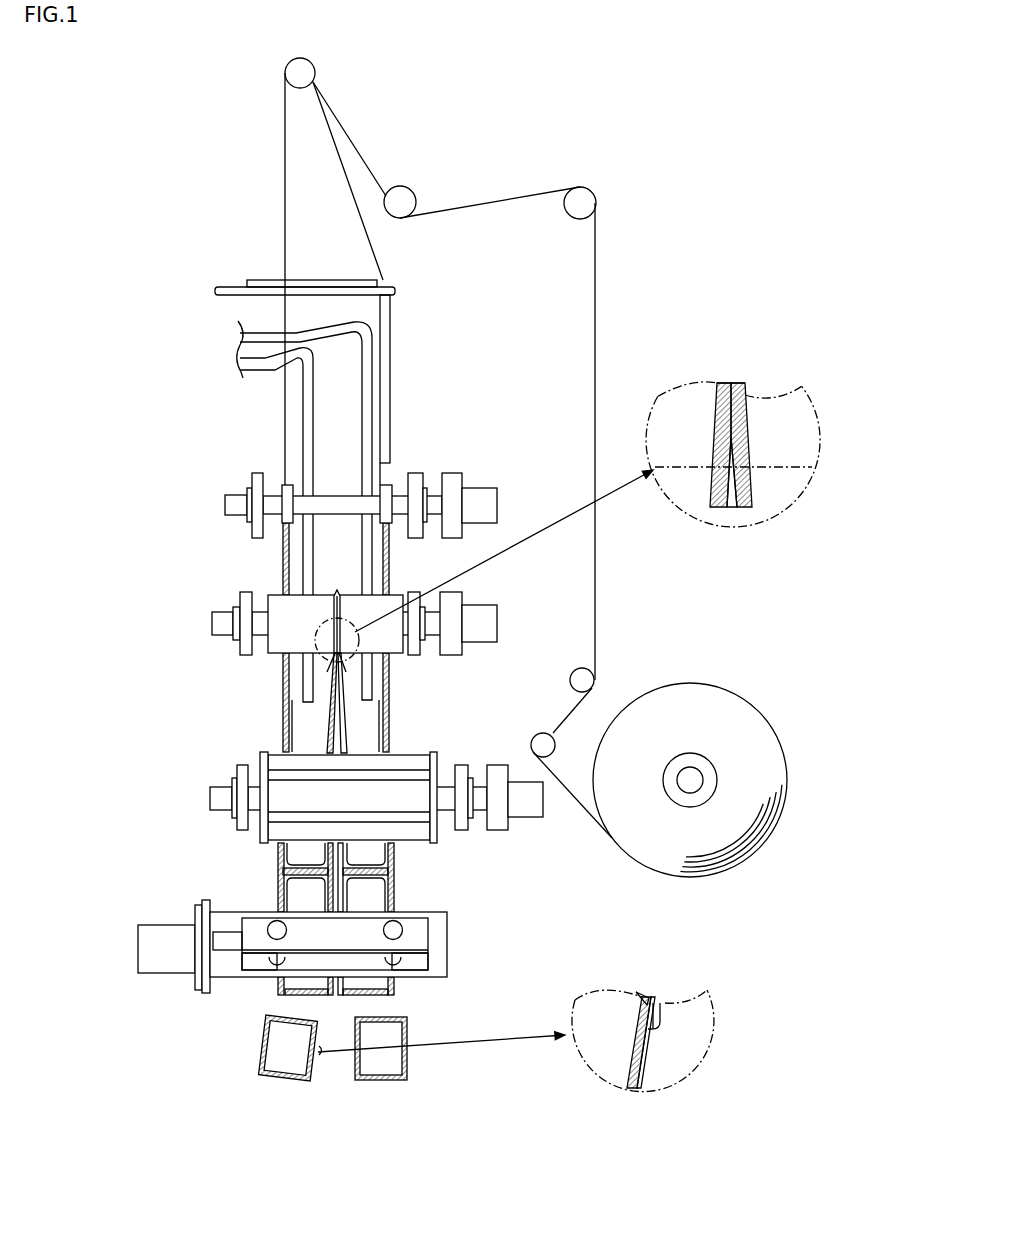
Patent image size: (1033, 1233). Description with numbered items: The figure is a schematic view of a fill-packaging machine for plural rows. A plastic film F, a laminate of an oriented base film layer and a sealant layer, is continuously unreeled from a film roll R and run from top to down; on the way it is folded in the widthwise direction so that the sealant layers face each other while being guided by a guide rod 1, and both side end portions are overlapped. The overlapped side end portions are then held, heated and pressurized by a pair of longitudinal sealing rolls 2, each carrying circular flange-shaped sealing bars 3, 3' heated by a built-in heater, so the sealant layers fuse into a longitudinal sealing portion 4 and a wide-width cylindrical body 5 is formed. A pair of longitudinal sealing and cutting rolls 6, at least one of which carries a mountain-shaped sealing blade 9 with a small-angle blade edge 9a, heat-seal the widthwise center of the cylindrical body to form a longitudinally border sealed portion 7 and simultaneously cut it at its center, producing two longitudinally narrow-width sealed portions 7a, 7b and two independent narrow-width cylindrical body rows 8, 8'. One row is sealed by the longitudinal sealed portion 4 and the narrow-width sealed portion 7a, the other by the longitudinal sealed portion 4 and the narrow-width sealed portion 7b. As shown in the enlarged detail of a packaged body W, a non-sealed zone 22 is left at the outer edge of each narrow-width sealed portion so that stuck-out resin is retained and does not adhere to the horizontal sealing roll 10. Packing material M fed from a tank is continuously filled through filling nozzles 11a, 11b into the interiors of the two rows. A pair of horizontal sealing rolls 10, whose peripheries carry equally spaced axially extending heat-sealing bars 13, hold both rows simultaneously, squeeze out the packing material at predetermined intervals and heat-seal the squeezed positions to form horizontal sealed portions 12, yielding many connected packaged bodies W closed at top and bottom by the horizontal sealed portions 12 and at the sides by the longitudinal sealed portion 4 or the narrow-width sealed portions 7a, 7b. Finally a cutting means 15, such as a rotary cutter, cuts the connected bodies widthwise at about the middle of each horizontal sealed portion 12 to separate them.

The guide rod 1 is at (392, 313).
The longitudinal sealing rolls 2 is at (206, 486).
The sealing bar 3 is at (251, 476).
The sealing bar 3' is at (408, 474).
The longitudinal sealing portion 4 is at (284, 560).
The wide-width cylindrical body 5 is at (340, 572).
The longitudinal sealing and cutting rolls 6 is at (205, 606).
The longitudinally border sealed portion 7 is at (716, 398).
The longitudinally narrow-width sealed portion 7a is at (330, 697).
The longitudinally narrow-width sealed portion 7b is at (345, 705).
The narrow-width cylindrical body row 8 is at (274, 726).
The narrow-width cylindrical body row 8' is at (400, 726).
The sealing blade 9 is at (324, 619).
The blade edge 9a is at (332, 628).
The horizontal sealing rolls 10 is at (190, 789).
The filling nozzle 11a is at (310, 405).
The filling nozzle 11b is at (368, 378).
The horizontal sealed portion 12 is at (390, 872).
The heat-sealing bars 13 is at (283, 775).
The cutting means 15 is at (165, 907).
The non-sealed zone 22 is at (663, 1003).
The plastic film F is at (349, 138).
The packing material M is at (372, 898).
The film roll R is at (752, 706).
The packaged body W is at (240, 1028).